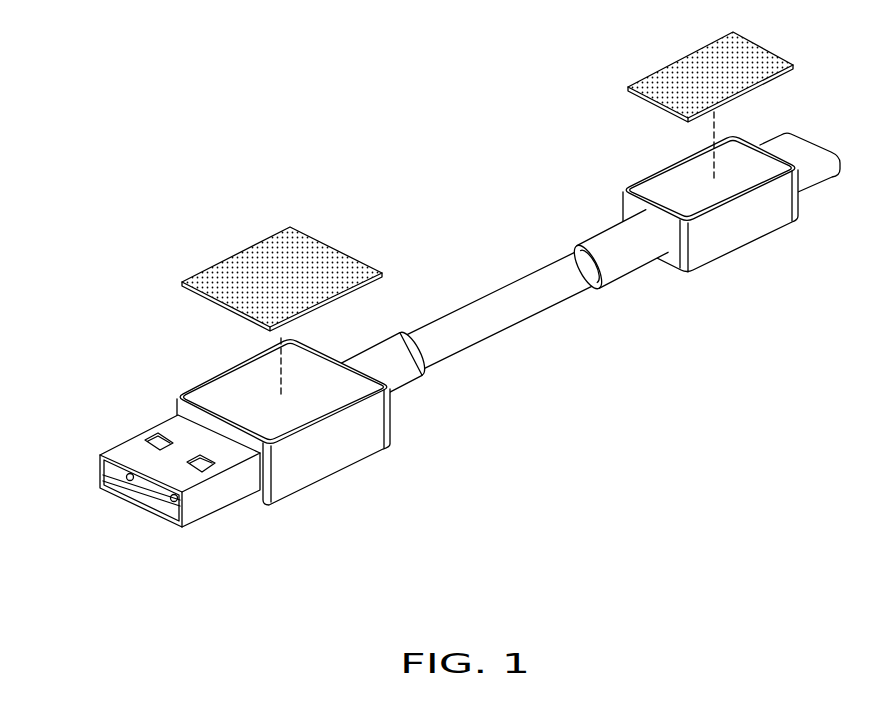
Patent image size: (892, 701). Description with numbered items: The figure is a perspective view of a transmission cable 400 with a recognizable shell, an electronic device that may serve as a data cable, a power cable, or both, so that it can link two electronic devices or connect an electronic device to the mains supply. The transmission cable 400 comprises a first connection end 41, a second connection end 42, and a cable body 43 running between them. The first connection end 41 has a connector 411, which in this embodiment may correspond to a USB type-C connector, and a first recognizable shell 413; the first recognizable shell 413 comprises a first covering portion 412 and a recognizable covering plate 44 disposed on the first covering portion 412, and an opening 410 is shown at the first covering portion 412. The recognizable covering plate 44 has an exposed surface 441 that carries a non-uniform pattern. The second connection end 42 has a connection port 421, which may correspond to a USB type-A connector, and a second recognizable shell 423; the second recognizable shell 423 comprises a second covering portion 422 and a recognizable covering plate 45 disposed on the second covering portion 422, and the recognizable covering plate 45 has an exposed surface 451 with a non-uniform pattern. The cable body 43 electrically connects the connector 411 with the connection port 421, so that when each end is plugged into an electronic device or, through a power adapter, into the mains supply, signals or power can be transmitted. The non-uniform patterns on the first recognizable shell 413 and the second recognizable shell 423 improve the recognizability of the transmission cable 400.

The transmission cable 400 is at (49, 115).
The first connection end 41 is at (712, 198).
The accommodating opening of second housing 410 is at (623, 192).
The connector 411 is at (812, 182).
The first covering portion 412 is at (683, 228).
The first recognizable shell 413 is at (689, 177).
The second connection end 42 is at (265, 409).
The connection port 421 is at (182, 499).
The second covering portion 422 is at (297, 418).
The second recognizable shell 423 is at (303, 388).
The cable body 43 is at (541, 288).
The recognizable covering plate 44 is at (712, 148).
The exposed surface 441 is at (710, 89).
The recognizable covering plate 45 is at (282, 359).
The exposed surface 451 is at (282, 294).